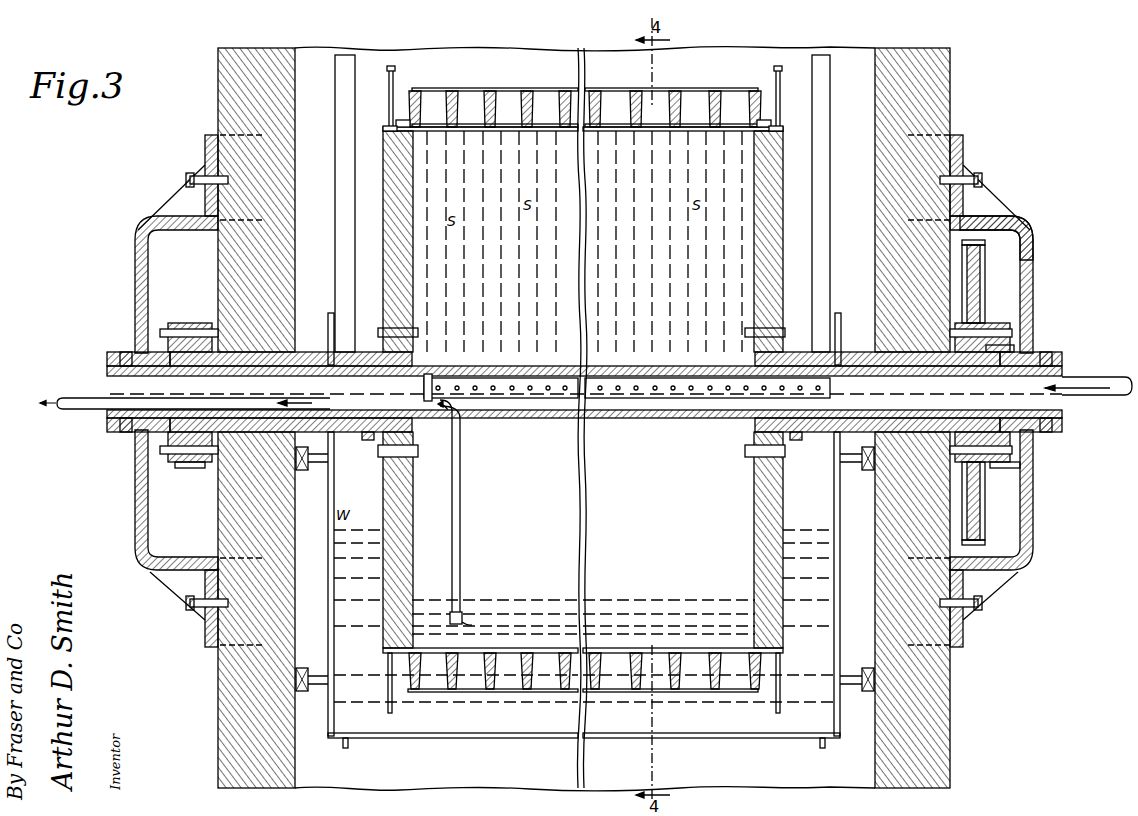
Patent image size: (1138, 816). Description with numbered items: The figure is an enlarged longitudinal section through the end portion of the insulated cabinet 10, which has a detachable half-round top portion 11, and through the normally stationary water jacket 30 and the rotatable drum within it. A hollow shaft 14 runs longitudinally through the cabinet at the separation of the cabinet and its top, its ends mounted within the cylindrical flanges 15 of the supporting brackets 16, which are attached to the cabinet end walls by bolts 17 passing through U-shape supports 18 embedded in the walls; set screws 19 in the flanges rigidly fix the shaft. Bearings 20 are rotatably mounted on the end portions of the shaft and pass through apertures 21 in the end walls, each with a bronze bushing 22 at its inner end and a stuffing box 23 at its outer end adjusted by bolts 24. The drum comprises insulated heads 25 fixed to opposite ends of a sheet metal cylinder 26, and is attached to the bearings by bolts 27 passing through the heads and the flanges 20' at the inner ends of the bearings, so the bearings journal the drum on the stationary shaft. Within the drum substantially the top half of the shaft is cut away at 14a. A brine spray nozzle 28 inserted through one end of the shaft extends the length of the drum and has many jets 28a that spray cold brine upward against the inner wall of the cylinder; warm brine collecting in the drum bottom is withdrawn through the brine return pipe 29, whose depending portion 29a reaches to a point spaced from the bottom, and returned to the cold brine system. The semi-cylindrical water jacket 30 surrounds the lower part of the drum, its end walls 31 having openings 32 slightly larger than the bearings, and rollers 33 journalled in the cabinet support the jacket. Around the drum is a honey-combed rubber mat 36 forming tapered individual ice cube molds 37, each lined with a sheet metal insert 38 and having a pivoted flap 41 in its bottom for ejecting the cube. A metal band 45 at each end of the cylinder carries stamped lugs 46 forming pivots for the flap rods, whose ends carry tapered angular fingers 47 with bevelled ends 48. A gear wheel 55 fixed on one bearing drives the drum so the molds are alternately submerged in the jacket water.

The cabinet 10 is at (218, 692).
The half-round top portion 11 is at (218, 98).
The hollow shaft 14 is at (1062, 414).
The cut-away portion of hollow shaft 14a is at (430, 376).
The cylindrical flanges 15 is at (115, 358).
The supporting brackets 16 is at (135, 290).
The bolts 17 is at (190, 180).
The U-shape supports 18 is at (940, 135).
The set screws 19 is at (126, 352).
The bearings 20 is at (585, 341).
The flanges of bearings 20' is at (585, 467).
The apertures 21 is at (265, 350).
The bronze bushing 22 is at (333, 340).
The stuffing box 23 is at (196, 468).
The bolts 24 is at (190, 322).
The insulated heads 25 is at (392, 205).
The sheet metal cylinder 26 is at (432, 132).
The bolts 27 is at (374, 457).
The brine spray nozzle 28 is at (610, 385).
The apertures or jets 28a is at (495, 385).
The brine return pipe 29 is at (112, 410).
The depending portion of brine return pipe 29a is at (461, 560).
The water jacket 30 is at (474, 740).
The end walls of water jacket 31 is at (328, 588).
The openings 32 is at (364, 440).
The rollers 33 is at (303, 471).
The hollow rubber cylinder or mat 36 is at (762, 88).
The ice cube molds 37 is at (490, 90).
The sheet metal inserts 38 is at (455, 95).
The pivoted flap 41 is at (480, 124).
The metal ring or band 45 is at (392, 127).
The ears or lugs 46 is at (400, 122).
The angular fingers 47 is at (394, 80).
The bevelled ends 48 is at (391, 72).
The gear wheel 55 is at (1033, 230).